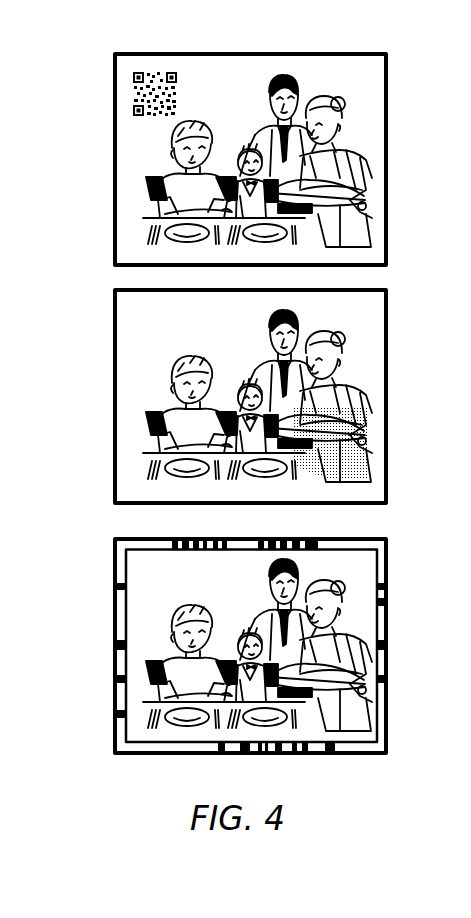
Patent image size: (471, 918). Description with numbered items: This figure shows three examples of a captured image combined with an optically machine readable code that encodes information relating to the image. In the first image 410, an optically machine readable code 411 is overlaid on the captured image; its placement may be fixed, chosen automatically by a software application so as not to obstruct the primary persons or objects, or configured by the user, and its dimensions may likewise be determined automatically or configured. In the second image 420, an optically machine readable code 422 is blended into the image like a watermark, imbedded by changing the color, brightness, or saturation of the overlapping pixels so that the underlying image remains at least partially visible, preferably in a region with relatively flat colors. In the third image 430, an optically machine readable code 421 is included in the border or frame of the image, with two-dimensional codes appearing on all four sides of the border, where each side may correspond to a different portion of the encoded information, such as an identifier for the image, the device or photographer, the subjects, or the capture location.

The first image 410 is at (245, 145).
The optically machine readable code 411 is at (125, 92).
The second image 420 is at (280, 382).
The optically machine readable code 422 is at (363, 432).
The third image 430 is at (240, 632).
The optically machine readable code 421 is at (113, 662).